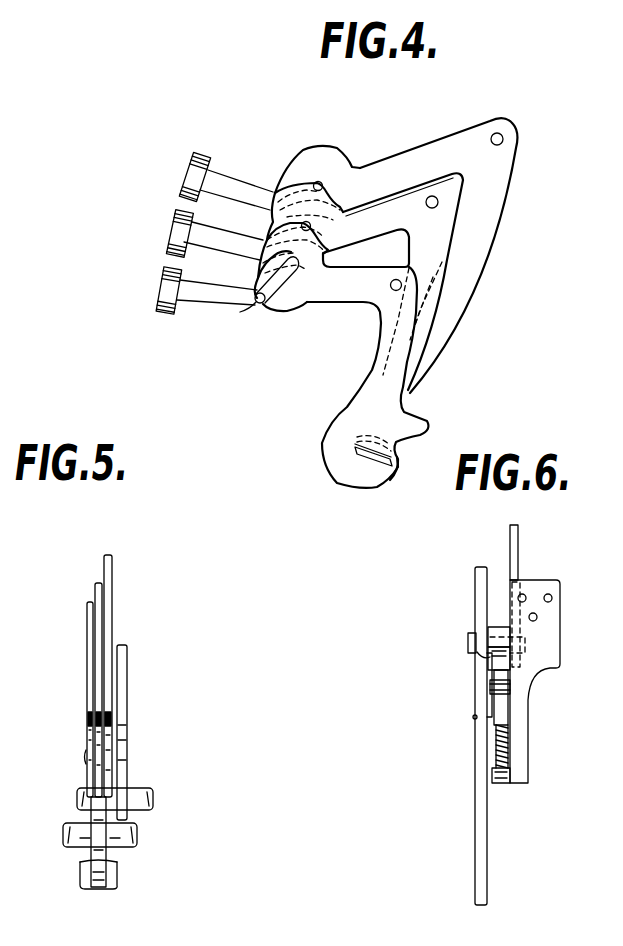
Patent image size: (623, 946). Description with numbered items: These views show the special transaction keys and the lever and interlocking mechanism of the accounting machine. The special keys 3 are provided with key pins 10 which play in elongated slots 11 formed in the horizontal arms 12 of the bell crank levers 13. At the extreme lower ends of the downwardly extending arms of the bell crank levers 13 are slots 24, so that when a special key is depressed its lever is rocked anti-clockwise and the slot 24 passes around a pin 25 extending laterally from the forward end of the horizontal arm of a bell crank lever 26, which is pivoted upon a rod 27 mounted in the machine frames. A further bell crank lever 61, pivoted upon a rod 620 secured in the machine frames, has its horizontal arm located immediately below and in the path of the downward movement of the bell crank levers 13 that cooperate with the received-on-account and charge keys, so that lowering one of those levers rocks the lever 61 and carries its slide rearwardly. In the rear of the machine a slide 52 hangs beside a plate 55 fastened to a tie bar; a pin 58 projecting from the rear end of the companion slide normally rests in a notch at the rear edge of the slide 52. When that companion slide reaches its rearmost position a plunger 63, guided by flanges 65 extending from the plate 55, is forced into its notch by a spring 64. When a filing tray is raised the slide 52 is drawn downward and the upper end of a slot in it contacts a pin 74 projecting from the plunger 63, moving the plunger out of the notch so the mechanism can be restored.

In FIG. 4, the special keys 3 is at (163, 267).
In FIG. 4, the key pins 10 is at (258, 305).
In FIG. 4, the elongated slots 11 is at (292, 274).
In FIG. 4, the horizontal arms 12 is at (381, 260).
In FIG. 4, the bell crank levers 13 is at (505, 162).
In FIG. 5, the bell crank levers 13 is at (108, 673).
In FIG. 4, the slots 24 is at (370, 462).
In FIG. 5, the pin 25 is at (86, 756).
In FIG. 5, the bell crank lever 26 is at (128, 694).
In FIG. 5, the rod 27 is at (153, 792).
In FIG. 5, the bell crank lever 61 is at (83, 854).
In FIG. 5, the rod 620 is at (120, 853).
In FIG. 6, the slide 52 is at (477, 605).
In FIG. 6, the plate 55 is at (560, 642).
In FIG. 6, the pin 58 is at (477, 655).
In FIG. 6, the plunger 63 is at (508, 706).
In FIG. 6, the spring 64 is at (508, 739).
In FIG. 6, the flanges 65 is at (504, 785).
In FIG. 6, the pin 74 is at (473, 719).